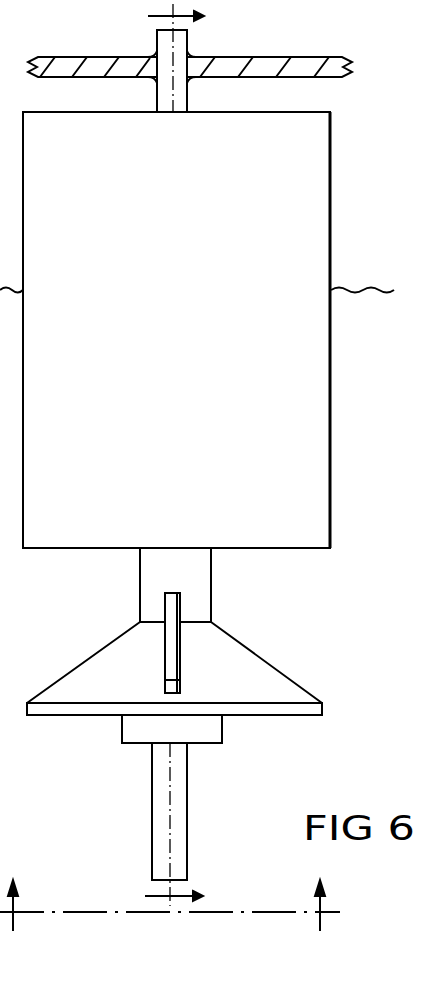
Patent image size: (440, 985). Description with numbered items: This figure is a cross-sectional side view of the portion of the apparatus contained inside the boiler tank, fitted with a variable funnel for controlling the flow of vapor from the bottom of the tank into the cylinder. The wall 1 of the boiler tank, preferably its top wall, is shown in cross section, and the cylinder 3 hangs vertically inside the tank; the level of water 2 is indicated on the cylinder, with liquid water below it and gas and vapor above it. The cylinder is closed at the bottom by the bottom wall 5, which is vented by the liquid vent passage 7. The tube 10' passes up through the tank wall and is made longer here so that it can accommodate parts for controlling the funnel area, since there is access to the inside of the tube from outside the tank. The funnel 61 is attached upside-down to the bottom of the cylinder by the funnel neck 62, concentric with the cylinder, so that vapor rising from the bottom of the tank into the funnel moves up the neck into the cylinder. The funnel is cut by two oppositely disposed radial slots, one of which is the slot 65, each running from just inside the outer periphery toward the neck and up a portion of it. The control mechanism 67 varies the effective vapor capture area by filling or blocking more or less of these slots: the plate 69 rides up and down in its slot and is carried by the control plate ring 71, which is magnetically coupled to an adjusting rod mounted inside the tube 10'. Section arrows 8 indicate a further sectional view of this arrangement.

The wall 1 is at (257, 57).
The level of water 2 is at (352, 289).
The cylinder 3 is at (330, 118).
The bottom wall 5 is at (170, 471).
The liquid vent passage 7 is at (7, 569).
The section line 8- 8 is at (172, 905).
The tube 10' is at (201, 455).
The funnel 61 is at (28, 703).
The funnel neck 62 is at (212, 581).
The radial slot 65 is at (164, 688).
The control mechanism 67 is at (103, 728).
The plate 69 is at (173, 640).
The control plate ring 71 is at (224, 742).